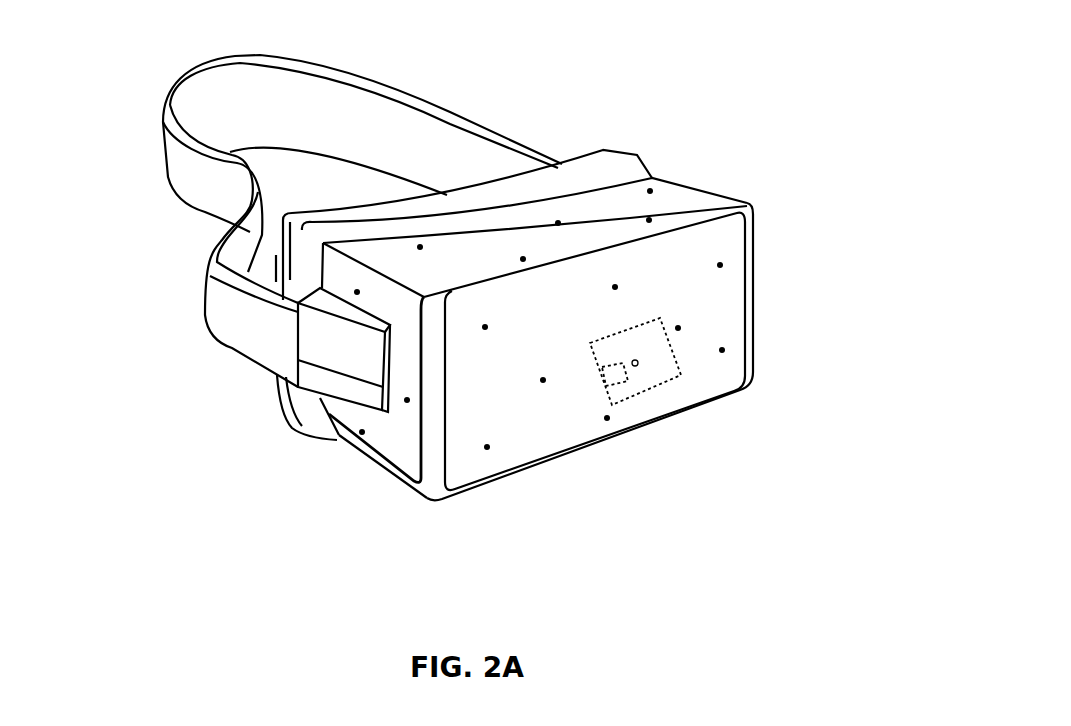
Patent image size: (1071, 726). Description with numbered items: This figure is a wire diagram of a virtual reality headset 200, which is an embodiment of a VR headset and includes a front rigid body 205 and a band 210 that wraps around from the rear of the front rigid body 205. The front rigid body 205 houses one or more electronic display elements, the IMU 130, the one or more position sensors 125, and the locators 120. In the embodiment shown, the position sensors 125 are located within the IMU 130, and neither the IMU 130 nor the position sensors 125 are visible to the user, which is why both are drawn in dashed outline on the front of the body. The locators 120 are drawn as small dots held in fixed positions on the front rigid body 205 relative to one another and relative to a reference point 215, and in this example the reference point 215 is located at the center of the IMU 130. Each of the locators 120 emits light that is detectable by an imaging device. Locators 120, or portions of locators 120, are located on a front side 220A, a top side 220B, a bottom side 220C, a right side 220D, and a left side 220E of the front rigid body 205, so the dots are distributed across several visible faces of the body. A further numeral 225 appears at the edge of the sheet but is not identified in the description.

The VR headset 200 is at (82, 55).
The front rigid body 205 is at (751, 202).
The band 210 is at (462, 120).
The locators 120 is at (740, 340).
The position sensors 125 is at (608, 397).
The IMU 130 is at (695, 382).
The reference point 215 is at (643, 385).
The front side 220A is at (471, 481).
The top side 220B is at (384, 247).
The bottom side 220C is at (353, 482).
The right side 220D is at (395, 443).
The left side 220E is at (731, 180).
The (cut-off numeral) 225 is at (64, 719).